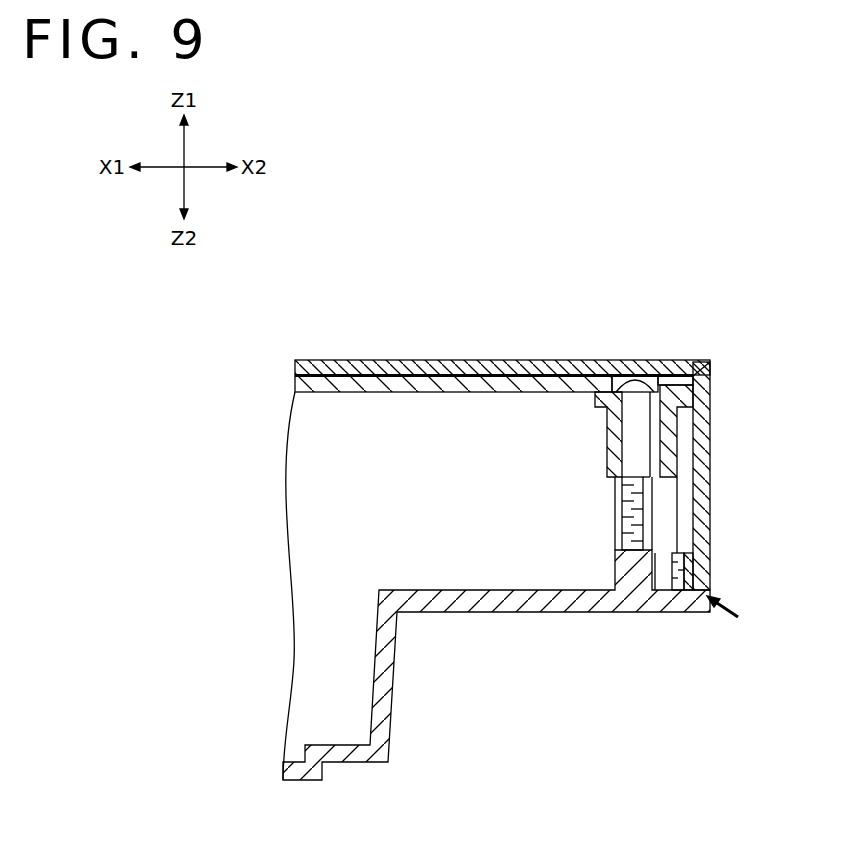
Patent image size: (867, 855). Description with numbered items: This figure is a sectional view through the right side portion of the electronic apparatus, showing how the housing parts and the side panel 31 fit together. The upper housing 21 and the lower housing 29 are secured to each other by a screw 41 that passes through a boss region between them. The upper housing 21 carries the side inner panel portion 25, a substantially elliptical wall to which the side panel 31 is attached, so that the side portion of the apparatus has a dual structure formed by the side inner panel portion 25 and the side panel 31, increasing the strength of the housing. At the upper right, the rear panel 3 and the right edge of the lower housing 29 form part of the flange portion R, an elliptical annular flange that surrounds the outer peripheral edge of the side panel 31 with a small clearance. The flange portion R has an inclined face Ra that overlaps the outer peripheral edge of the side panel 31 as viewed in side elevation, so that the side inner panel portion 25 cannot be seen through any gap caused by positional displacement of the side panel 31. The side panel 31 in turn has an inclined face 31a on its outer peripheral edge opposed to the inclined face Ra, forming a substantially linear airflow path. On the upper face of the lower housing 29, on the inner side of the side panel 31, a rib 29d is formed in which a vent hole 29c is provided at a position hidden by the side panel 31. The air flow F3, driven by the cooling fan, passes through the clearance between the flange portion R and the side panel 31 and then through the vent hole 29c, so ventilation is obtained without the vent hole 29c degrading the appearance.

The rear panel 3 is at (503, 370).
The upper housing 21 is at (408, 387).
The screw 41 is at (632, 397).
The flange portion R is at (710, 362).
The inclined face Ra is at (705, 380).
The side panel 31 is at (703, 478).
The inclined face 31a is at (697, 392).
The side inner panel portion 25 is at (683, 508).
The lower housing 29 is at (478, 613).
The vent hole 29c is at (668, 578).
The rib 29d is at (676, 563).
The air flow F3 is at (741, 615).